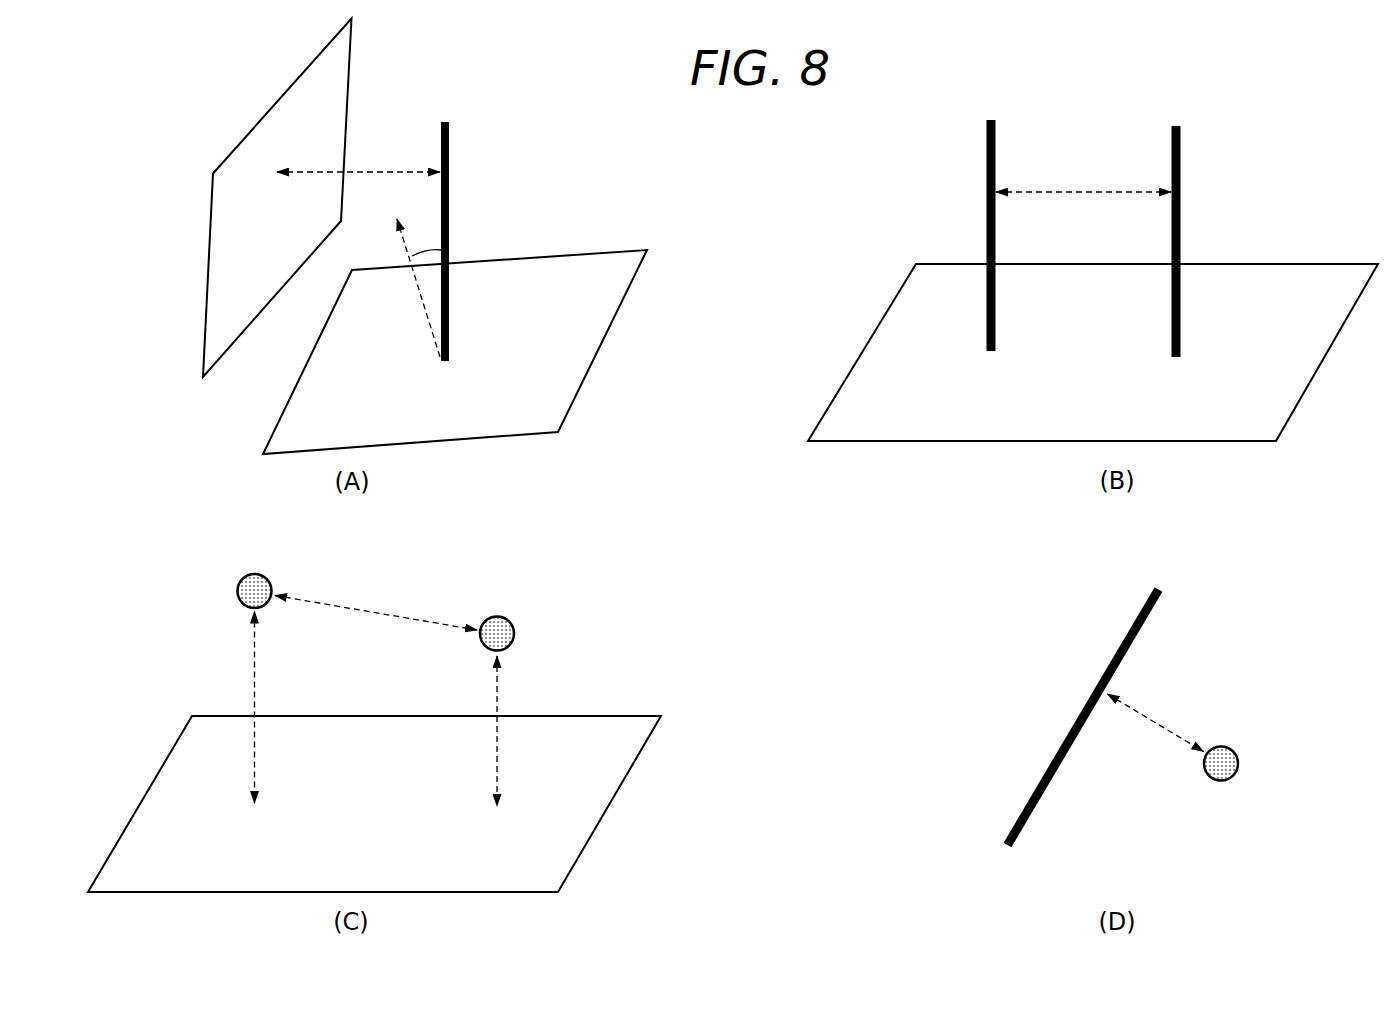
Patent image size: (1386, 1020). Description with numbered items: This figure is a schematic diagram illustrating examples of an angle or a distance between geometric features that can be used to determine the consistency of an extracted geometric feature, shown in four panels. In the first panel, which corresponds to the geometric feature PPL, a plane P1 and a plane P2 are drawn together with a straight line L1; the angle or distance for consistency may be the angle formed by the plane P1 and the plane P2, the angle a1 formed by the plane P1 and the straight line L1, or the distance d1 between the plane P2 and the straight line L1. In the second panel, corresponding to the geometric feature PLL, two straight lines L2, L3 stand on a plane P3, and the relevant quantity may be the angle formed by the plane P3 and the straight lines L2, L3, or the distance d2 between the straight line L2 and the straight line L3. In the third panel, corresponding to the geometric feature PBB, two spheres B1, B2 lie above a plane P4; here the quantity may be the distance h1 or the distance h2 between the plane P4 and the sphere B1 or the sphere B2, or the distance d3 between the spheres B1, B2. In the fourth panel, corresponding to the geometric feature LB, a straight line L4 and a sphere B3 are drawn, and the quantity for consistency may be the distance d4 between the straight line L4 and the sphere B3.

The plane P1 is at (578, 258).
The plane P2 is at (333, 65).
The plane P3 is at (1298, 274).
The plane P4 is at (600, 723).
The straight line L1 is at (450, 137).
The straight line L2 is at (986, 329).
The straight line L3 is at (1171, 329).
The straight line L4 is at (1043, 795).
The sphere B1 is at (258, 573).
The sphere B2 is at (500, 618).
The sphere B3 is at (1227, 746).
The distance d1 is at (358, 156).
The distance d2 is at (1083, 177).
The distance d3 is at (376, 606).
The distance d4 is at (1156, 723).
The angle a1 is at (419, 286).
The distance h1 is at (237, 708).
The distance h2 is at (479, 731).